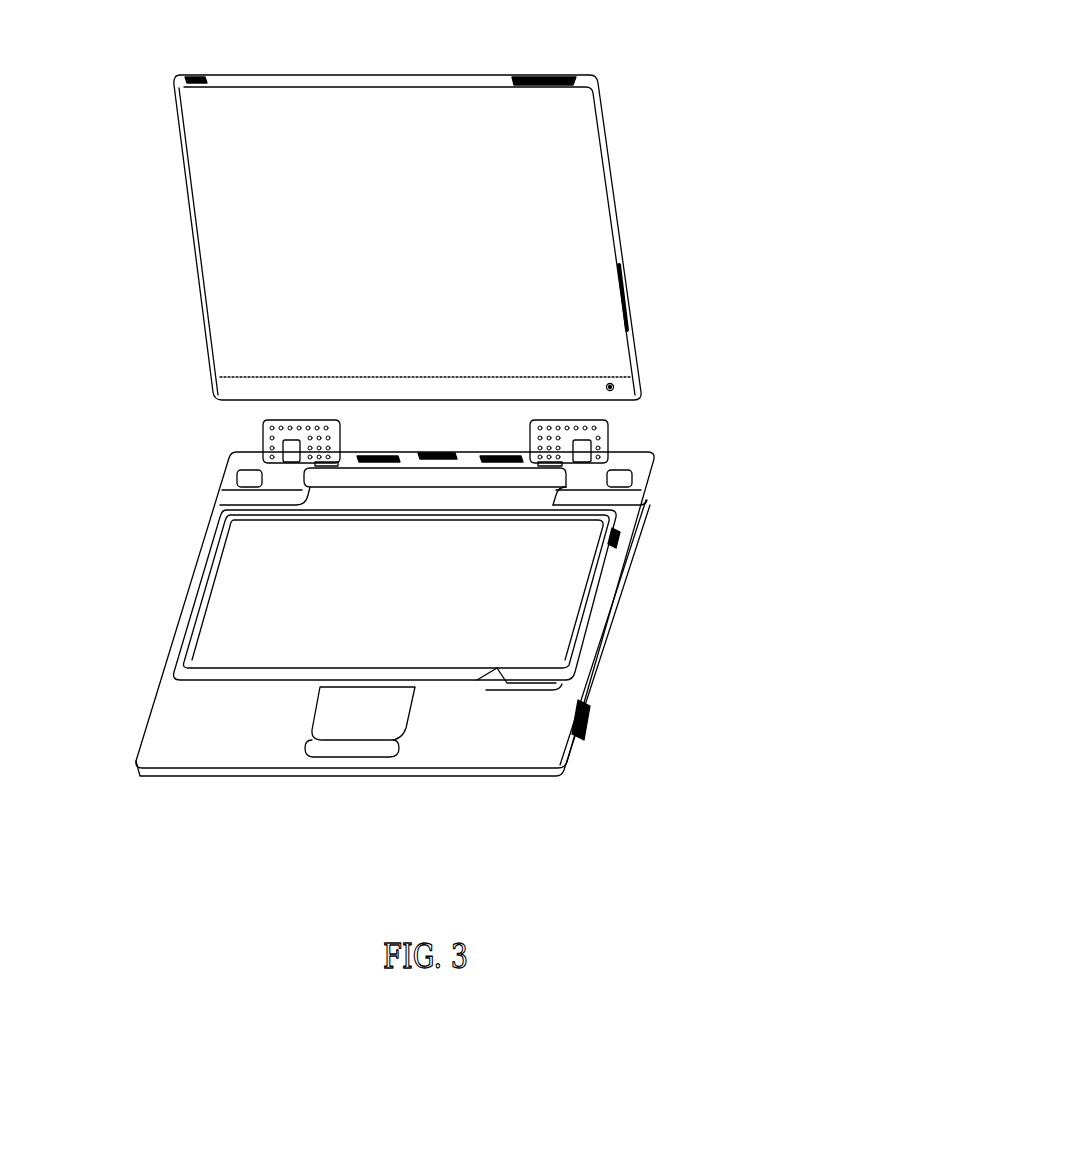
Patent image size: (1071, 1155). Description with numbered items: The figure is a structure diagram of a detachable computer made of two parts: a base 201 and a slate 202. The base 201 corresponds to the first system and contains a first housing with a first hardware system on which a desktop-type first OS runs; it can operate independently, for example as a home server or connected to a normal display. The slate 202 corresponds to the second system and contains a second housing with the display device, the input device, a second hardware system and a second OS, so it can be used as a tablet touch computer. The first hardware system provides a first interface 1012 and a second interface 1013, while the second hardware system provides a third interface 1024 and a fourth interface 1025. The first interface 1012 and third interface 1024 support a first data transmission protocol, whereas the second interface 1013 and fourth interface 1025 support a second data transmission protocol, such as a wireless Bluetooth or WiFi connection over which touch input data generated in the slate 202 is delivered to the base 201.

The base 201 is at (452, 585).
The slate 202 is at (520, 283).
The first interface 1012 is at (410, 463).
The second interface 1013 is at (583, 727).
The third interface 1024 is at (445, 455).
The fourth interface 1025 is at (565, 75).